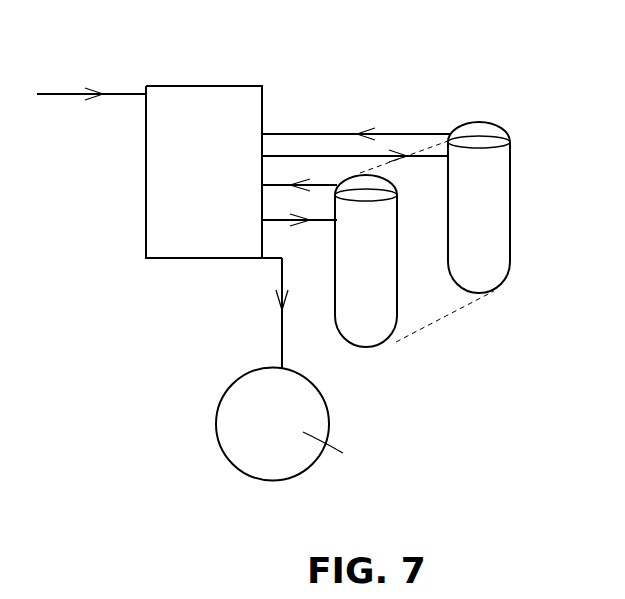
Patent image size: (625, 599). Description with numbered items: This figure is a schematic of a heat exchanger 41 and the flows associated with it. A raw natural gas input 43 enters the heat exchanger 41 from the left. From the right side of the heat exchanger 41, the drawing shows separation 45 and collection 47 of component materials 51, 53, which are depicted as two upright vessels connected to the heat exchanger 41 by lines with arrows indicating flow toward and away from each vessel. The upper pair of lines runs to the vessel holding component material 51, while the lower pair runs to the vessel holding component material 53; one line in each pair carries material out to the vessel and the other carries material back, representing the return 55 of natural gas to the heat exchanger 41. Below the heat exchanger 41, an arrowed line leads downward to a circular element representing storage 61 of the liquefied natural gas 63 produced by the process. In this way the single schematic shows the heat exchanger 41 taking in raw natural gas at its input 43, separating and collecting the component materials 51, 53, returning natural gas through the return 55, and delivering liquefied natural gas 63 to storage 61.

The heat exchanger 41 is at (220, 86).
The raw natural gas input 43 is at (110, 93).
The separation 45 is at (301, 156).
The collection 47 is at (512, 153).
The component material 51 is at (481, 131).
The component material 53 is at (380, 270).
The return 55 is at (397, 134).
The storage 61 is at (328, 405).
The liquefied natural gas 63 is at (345, 456).